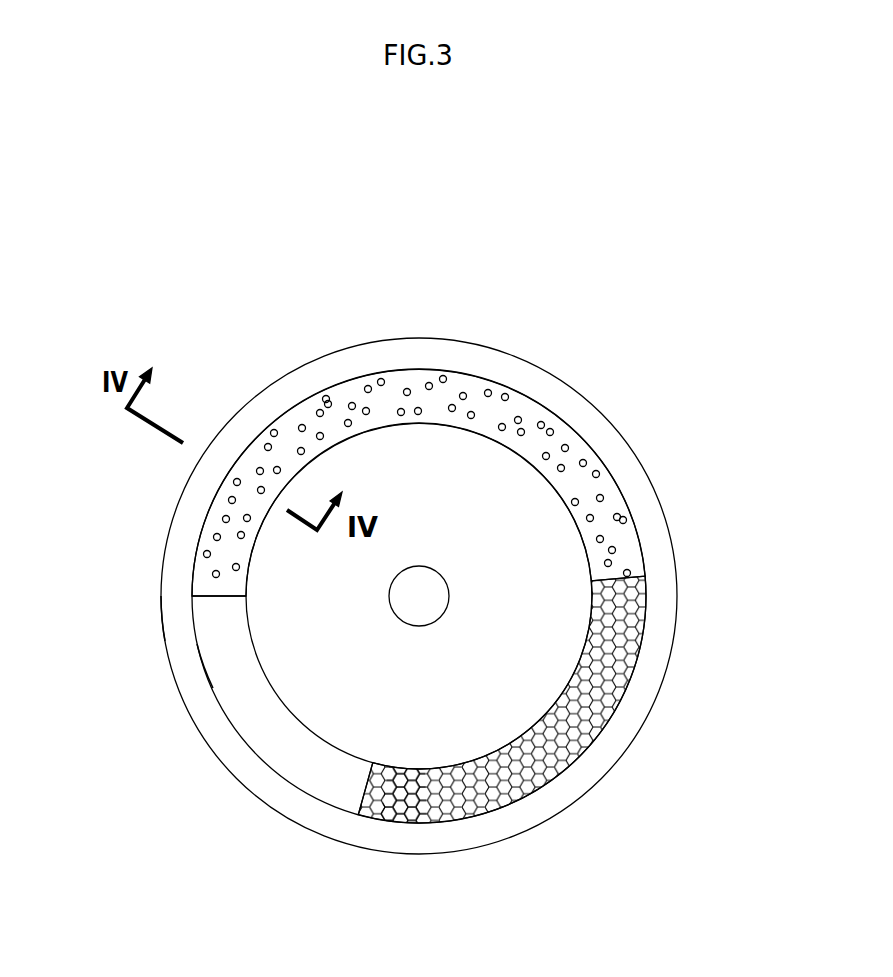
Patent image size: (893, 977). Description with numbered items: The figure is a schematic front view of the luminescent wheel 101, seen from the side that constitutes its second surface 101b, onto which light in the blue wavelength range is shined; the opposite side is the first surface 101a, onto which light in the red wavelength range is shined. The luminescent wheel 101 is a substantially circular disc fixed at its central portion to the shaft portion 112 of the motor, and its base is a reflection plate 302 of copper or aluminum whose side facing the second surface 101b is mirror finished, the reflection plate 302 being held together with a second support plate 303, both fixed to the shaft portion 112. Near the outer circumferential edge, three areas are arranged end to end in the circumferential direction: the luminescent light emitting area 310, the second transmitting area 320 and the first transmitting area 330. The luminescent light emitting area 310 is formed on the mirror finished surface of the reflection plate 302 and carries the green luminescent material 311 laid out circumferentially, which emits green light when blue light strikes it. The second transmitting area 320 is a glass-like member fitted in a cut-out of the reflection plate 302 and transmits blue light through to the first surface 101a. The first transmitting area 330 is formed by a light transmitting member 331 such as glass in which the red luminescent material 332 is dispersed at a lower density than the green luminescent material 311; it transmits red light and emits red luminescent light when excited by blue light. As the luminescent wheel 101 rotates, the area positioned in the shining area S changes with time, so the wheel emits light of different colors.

The luminescent wheel 101 is at (565, 311).
The first surface 101a is at (168, 663).
The second surface 101b is at (208, 715).
The shaft portion 112 is at (417, 593).
The reflection plate 302 is at (642, 467).
The second support plate 303 is at (381, 448).
The luminescent light emitting area 310 is at (577, 757).
The green luminescent material 311 is at (520, 775).
The second transmitting area 320 is at (275, 737).
The first transmitting area 330 is at (280, 450).
The light transmitting member 331 is at (225, 528).
The red luminescent material 332 is at (327, 401).
The shining area S is at (643, 638).